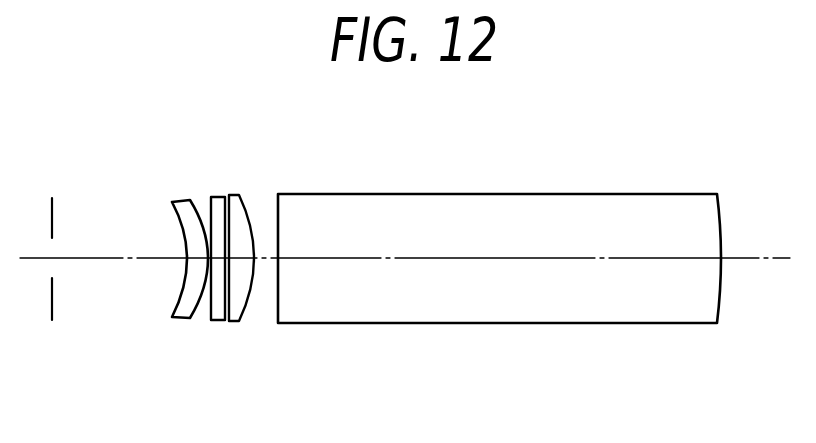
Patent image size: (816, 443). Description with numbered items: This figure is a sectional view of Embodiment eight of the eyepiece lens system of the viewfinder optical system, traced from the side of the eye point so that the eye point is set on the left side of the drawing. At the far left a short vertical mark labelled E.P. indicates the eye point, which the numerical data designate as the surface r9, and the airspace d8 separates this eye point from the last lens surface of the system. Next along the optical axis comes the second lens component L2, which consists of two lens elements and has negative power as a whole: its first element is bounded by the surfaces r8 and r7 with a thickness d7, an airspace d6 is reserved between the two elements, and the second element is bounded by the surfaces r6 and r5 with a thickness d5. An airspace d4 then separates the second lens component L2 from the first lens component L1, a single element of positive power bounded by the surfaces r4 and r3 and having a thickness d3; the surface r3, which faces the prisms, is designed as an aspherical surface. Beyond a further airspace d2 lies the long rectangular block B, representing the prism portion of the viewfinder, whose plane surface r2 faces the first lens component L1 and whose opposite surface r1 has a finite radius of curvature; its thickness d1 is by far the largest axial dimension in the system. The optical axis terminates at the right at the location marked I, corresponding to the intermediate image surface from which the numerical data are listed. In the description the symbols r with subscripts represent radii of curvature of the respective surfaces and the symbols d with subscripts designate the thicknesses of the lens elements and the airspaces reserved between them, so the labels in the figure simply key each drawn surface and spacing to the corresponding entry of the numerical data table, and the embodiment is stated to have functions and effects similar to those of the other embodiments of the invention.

The radius of curvature of first surface r1 is at (722, 212).
The radius of curvature of second surface r2 is at (278, 216).
The radius of curvature of third surface r3 is at (248, 222).
The radius of curvature of fourth surface r4 is at (231, 213).
The radius of curvature of fifth surface r5 is at (222, 214).
The radius of curvature of sixth surface r6 is at (209, 214).
The radius of curvature of seventh surface r7 is at (192, 212).
The radius of curvature of eighth surface r8 is at (176, 222).
The eye point r9 is at (53, 217).
The thickness of first element d1 is at (413, 262).
The airspace between second and third surfaces d2 is at (265, 262).
The thickness of first lens component d3 is at (248, 244).
The airspace between fourth and fifth surfaces d4 is at (241, 280).
The thickness of first element of second lens component d5 is at (208, 305).
The airspace between sixth and seventh surfaces d6 is at (204, 258).
The thickness of second element of second lens component d7 is at (194, 258).
The airspace between eighth surface and eye point d8 is at (108, 262).
The first lens component L1 is at (235, 324).
The second lens component L2 is at (230, 373).
The block (image guide / relay block) B is at (508, 324).
The entrance pupil E.P. is at (50, 277).
The image plane I is at (722, 259).